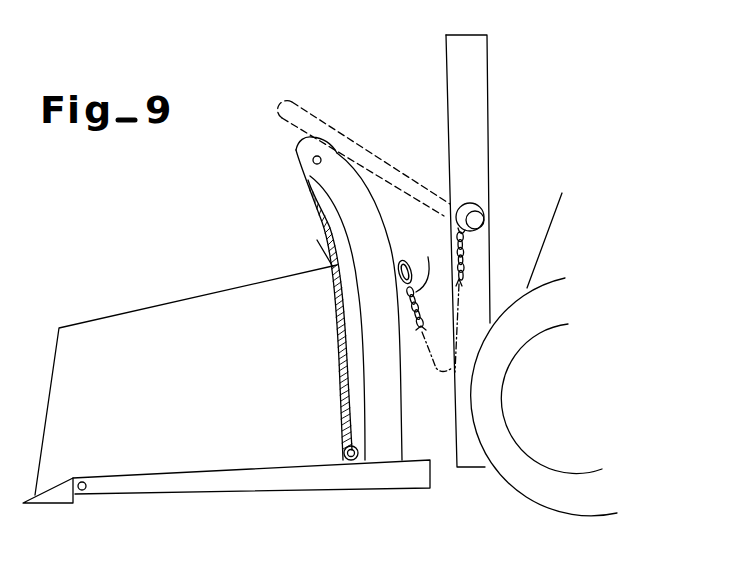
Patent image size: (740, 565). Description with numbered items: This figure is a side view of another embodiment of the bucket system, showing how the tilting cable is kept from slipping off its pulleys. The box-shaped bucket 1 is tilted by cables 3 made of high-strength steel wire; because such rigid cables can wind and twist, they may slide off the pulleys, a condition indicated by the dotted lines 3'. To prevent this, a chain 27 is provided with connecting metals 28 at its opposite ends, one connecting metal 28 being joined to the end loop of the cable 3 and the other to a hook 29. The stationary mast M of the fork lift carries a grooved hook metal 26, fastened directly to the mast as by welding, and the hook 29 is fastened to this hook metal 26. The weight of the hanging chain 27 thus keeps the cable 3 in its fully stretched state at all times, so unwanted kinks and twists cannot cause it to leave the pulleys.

The bucket 1 is at (188, 317).
The cable 3 is at (330, 298).
The dotted lines showing slipped cable 3' is at (364, 154).
The hook metal 26 is at (480, 222).
The chain 27 is at (447, 370).
The connecting metal 28 is at (457, 242).
The hook 29 is at (448, 206).
The stationary mast M is at (478, 108).